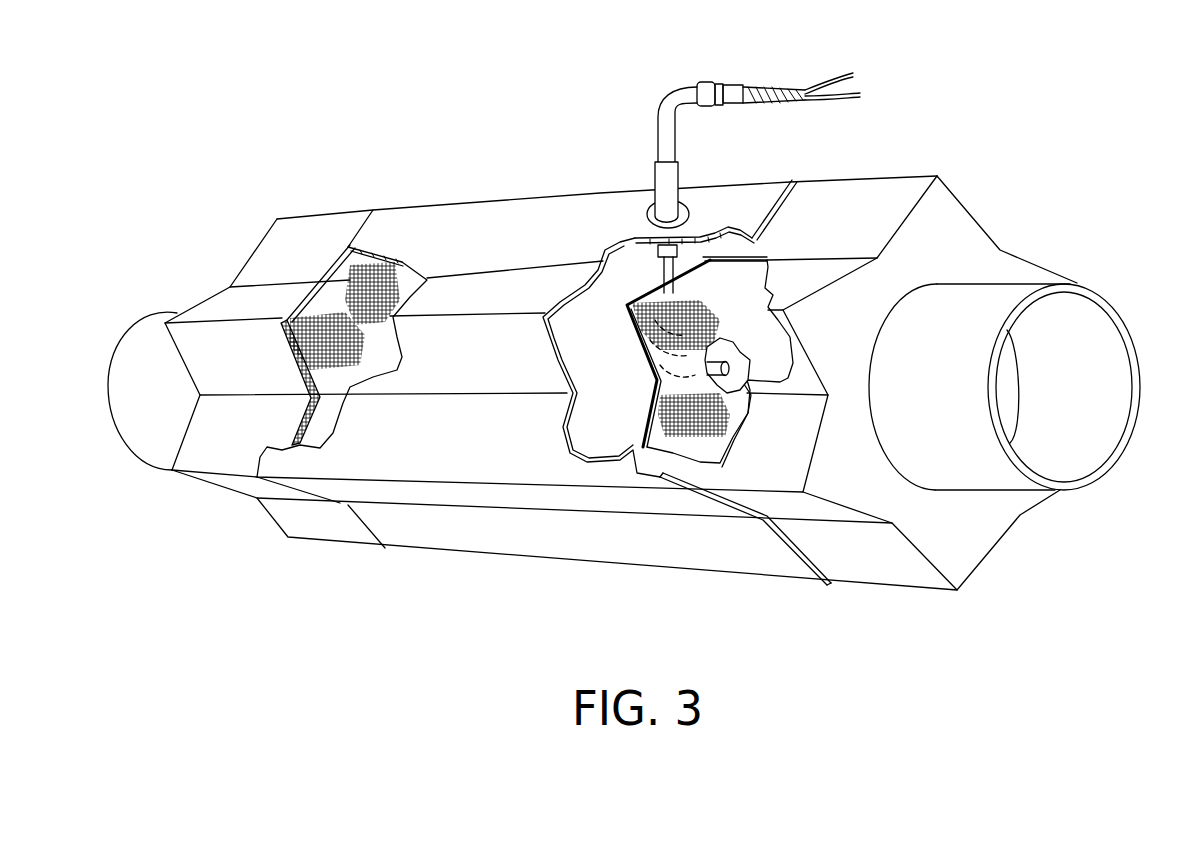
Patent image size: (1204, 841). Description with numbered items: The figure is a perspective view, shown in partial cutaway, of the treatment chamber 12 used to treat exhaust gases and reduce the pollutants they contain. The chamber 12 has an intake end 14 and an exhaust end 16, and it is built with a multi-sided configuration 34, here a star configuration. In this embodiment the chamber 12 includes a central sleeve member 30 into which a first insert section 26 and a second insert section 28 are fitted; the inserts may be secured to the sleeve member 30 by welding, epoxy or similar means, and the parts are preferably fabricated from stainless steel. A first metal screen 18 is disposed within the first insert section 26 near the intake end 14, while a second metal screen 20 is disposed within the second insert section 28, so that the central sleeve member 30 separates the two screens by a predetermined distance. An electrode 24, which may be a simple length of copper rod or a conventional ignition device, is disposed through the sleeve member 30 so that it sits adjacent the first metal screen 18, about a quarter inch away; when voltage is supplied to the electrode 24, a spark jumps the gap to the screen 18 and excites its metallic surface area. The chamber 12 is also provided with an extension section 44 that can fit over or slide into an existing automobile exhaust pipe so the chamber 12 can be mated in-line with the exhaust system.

The treatment chamber 12 is at (507, 146).
The intake end 14 is at (1002, 214).
The exhaust end 16 is at (253, 255).
The first metal screen 18 is at (648, 368).
The second metal screen 20 is at (305, 362).
The electrode 24 is at (665, 98).
The first insert section 26 is at (880, 175).
The second insert section 28 is at (327, 213).
The central sleeve member 30 is at (522, 189).
The multi-sided configuration 34 is at (186, 513).
The extension section 44 is at (1140, 388).